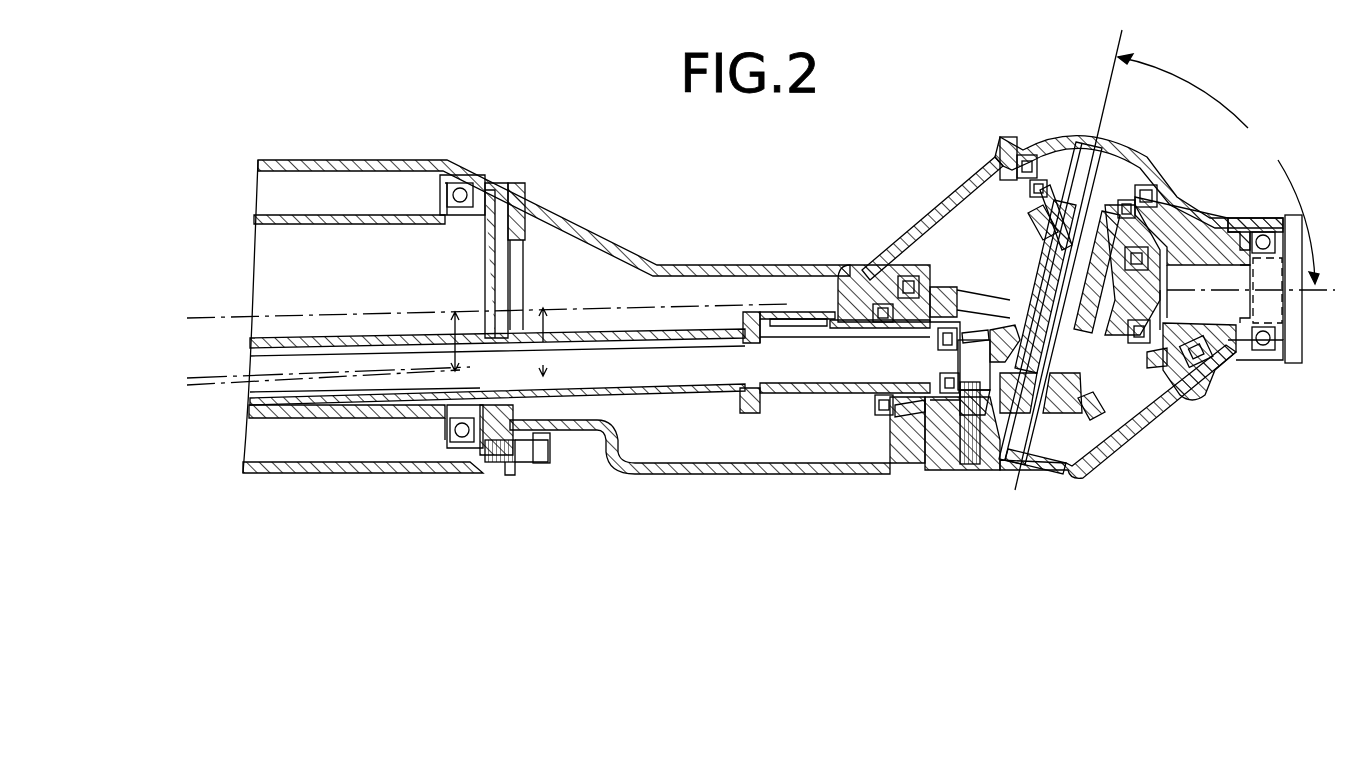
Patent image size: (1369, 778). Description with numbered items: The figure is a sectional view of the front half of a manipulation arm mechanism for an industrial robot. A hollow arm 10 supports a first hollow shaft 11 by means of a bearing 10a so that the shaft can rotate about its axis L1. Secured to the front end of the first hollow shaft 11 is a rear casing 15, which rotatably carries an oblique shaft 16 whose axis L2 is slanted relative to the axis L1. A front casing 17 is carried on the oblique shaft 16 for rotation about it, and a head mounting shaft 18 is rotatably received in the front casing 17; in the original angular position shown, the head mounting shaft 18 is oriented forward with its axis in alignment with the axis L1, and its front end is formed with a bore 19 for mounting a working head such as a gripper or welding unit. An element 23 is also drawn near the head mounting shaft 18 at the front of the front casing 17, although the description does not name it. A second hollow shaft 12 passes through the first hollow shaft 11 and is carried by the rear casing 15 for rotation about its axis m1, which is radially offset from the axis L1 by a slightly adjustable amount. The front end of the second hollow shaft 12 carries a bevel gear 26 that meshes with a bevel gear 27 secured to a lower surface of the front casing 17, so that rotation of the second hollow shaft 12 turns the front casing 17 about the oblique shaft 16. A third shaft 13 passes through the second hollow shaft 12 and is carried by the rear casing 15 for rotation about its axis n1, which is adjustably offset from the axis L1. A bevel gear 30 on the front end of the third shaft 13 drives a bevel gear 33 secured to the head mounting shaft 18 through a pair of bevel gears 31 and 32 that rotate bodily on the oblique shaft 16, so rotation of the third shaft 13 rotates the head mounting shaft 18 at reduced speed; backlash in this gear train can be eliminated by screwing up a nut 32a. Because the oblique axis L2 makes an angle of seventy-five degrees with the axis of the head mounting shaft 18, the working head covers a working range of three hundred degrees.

The hollow arm 10 is at (308, 160).
The bearing 10a is at (465, 446).
The first hollow shaft 11 is at (382, 213).
The second hollow shaft 12 is at (690, 390).
The third shaft 13 is at (712, 372).
The rear casing 15 is at (838, 476).
The oblique shaft 16 is at (1033, 455).
The front casing 17 is at (960, 184).
The head mounting shaft 18 is at (1297, 330).
The bore 19 is at (1303, 263).
The output hub 23 is at (1240, 370).
The bevel gear 26 is at (912, 432).
The bevel gear 27 is at (1155, 369).
The bevel gear 30 is at (977, 352).
The bevel gear 31 is at (1087, 413).
The bevel gear 32 is at (1033, 217).
The nut 32a is at (1050, 165).
The bevel gear 33 is at (1060, 306).
The axis of the first hollow shaft L1 is at (202, 316).
The axis of the oblique shaft L2 is at (1110, 97).
The axis of the second hollow shaft m1 is at (214, 378).
The axis of the third shaft n1 is at (208, 388).